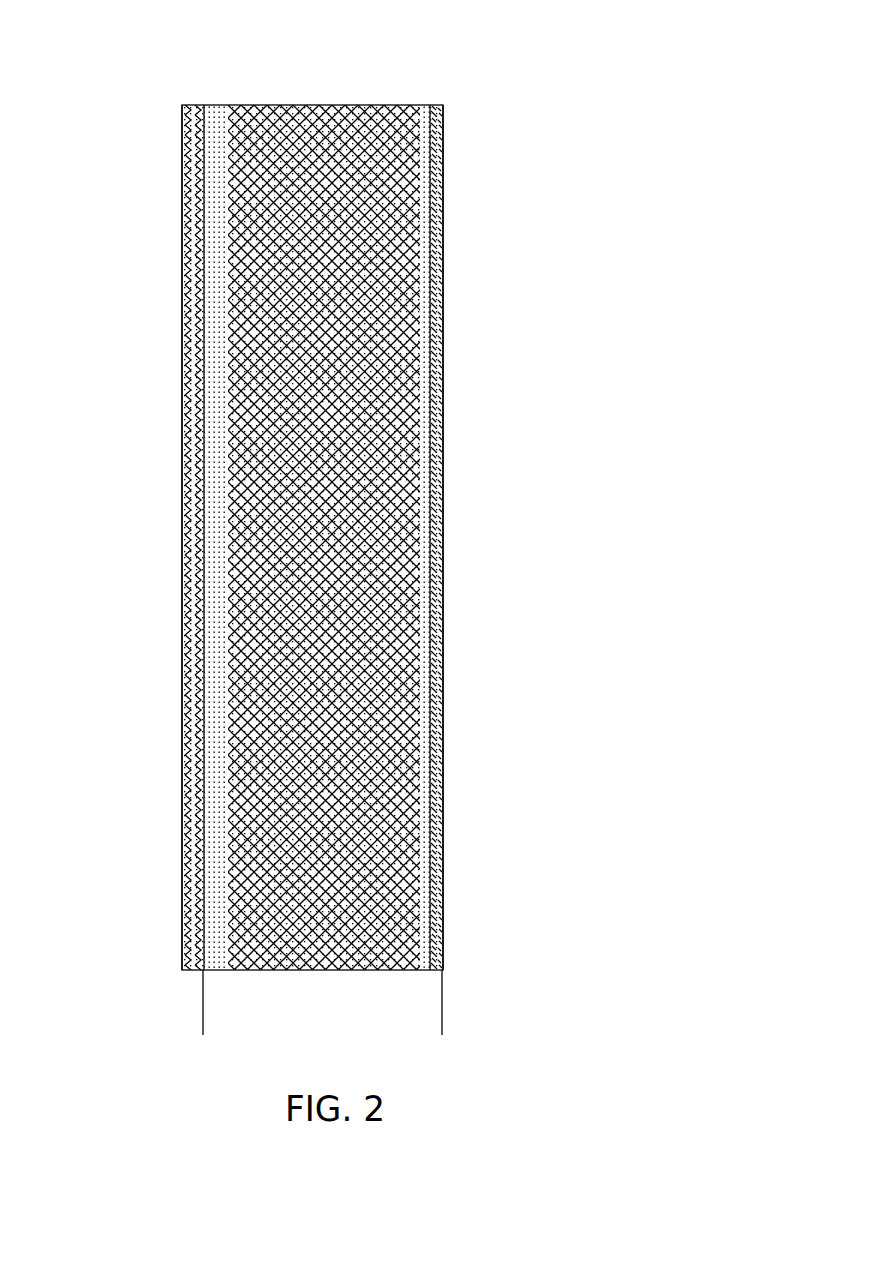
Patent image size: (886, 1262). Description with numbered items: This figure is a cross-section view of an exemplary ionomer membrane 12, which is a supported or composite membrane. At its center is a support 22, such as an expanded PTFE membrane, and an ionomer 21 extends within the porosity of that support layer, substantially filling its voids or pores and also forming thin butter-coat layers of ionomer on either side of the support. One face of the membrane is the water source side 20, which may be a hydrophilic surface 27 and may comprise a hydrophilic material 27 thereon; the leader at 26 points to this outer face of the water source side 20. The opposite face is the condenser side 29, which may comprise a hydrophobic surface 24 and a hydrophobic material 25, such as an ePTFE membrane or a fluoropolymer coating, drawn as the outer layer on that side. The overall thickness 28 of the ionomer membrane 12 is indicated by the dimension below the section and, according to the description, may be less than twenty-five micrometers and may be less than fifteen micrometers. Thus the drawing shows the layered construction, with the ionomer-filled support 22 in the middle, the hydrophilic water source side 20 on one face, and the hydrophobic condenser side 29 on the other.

The ionomer membrane 12 is at (175, 97).
The water source side 20 is at (175, 222).
The ionomer 21 is at (215, 118).
The support 22 is at (317, 122).
The hydrophobic surface 24 is at (438, 386).
The hydrophobic material 25 is at (430, 462).
The outer surface of first outer layer 26 is at (177, 470).
The hydrophilic surface 27 is at (187, 428).
The thickness 28 is at (197, 1014).
The condenser side 29 is at (438, 293).